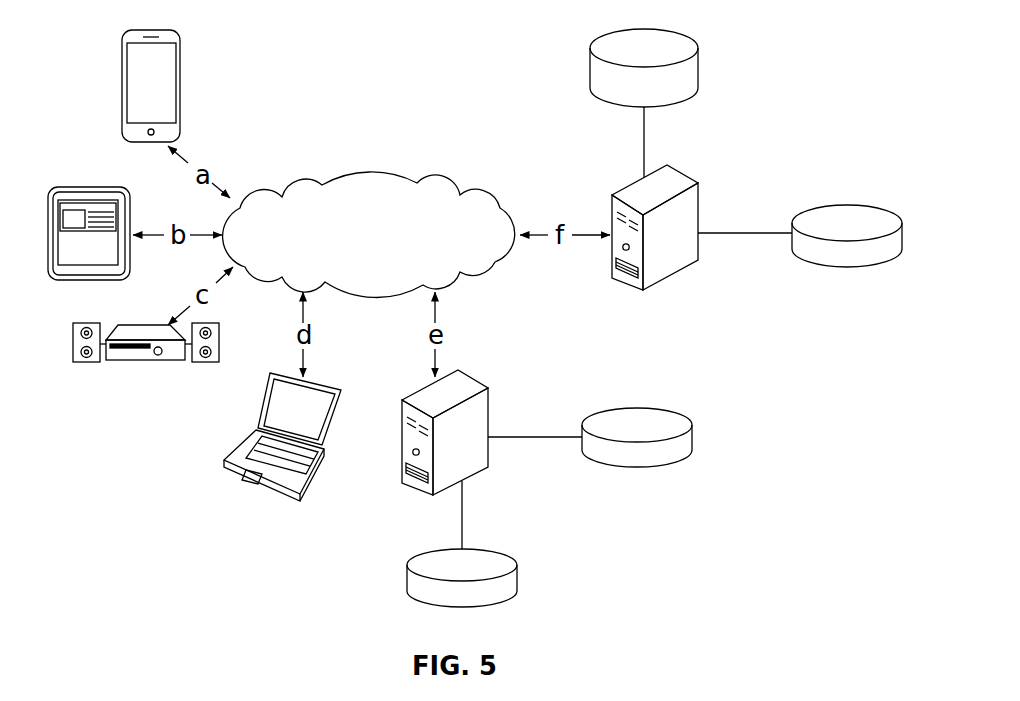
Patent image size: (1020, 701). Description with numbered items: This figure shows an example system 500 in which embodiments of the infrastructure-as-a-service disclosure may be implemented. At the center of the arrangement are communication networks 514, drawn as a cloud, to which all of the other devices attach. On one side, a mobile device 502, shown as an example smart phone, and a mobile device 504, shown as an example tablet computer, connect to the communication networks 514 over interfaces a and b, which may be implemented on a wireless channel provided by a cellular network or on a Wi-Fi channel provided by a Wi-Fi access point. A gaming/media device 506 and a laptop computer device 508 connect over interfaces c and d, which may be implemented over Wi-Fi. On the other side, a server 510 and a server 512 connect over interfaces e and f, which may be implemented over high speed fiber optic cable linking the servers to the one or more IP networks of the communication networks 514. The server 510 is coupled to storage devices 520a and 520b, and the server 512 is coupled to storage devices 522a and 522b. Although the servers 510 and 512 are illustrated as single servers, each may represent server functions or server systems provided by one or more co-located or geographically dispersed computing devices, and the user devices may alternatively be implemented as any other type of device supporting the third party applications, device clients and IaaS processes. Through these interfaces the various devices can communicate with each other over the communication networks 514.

The system 500 is at (815, 58).
The mobile device 502 is at (152, 30).
The mobile device 504 is at (88, 188).
The gaming/media device 506 is at (147, 363).
The laptop computer device 508 is at (248, 478).
The server 510 is at (489, 411).
The server 512 is at (700, 205).
The communication networks 514 is at (370, 172).
The storage device 520a is at (637, 408).
The storage device 520b is at (408, 578).
The storage device 522a is at (645, 48).
The storage device 522b is at (848, 206).